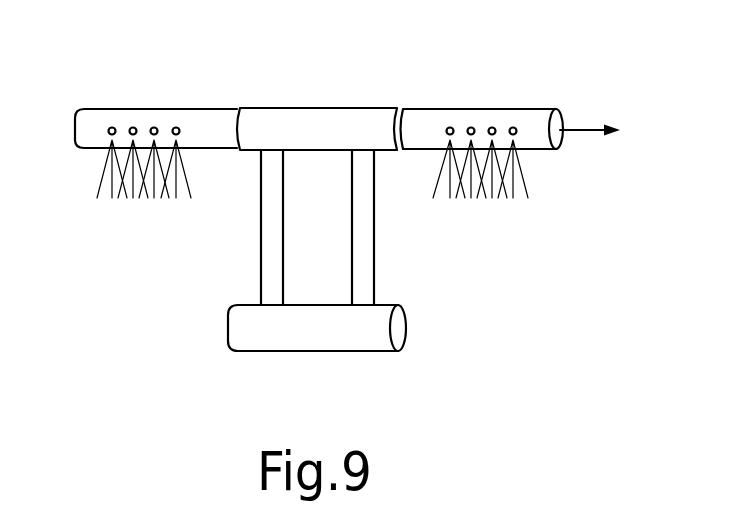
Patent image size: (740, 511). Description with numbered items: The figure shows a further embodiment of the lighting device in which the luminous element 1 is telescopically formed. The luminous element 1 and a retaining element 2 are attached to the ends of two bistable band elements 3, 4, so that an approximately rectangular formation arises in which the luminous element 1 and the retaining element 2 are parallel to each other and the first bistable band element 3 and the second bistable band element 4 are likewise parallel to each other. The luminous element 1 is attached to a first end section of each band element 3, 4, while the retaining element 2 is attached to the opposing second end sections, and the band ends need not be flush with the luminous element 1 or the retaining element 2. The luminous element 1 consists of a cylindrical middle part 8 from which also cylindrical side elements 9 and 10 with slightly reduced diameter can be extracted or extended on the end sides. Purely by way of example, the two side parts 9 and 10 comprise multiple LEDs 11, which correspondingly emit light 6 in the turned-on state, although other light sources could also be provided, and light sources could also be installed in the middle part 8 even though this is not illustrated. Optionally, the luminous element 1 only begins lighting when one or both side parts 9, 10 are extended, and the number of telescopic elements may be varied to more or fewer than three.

The luminous element 1 is at (266, 78).
The retaining element 2 is at (375, 352).
The first bistable band element 3 is at (268, 267).
The second bistable band element 4 is at (367, 267).
The light 6 is at (110, 198).
The cylindrical middle part 8 is at (330, 107).
The side element 9 is at (532, 108).
The side element 10 is at (90, 108).
The LEDs 11 is at (133, 124).